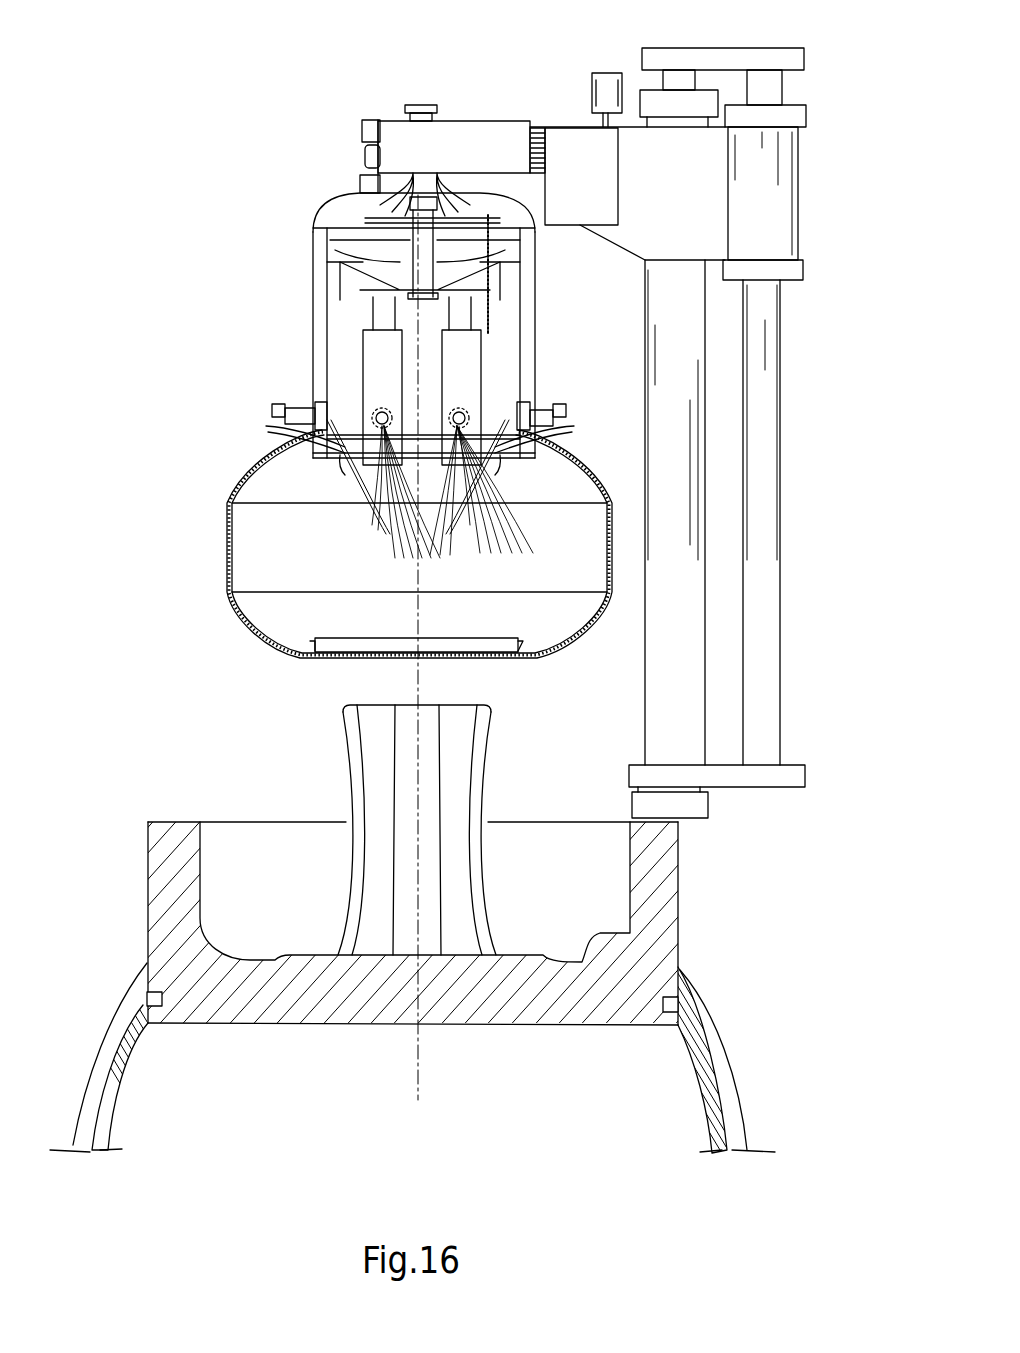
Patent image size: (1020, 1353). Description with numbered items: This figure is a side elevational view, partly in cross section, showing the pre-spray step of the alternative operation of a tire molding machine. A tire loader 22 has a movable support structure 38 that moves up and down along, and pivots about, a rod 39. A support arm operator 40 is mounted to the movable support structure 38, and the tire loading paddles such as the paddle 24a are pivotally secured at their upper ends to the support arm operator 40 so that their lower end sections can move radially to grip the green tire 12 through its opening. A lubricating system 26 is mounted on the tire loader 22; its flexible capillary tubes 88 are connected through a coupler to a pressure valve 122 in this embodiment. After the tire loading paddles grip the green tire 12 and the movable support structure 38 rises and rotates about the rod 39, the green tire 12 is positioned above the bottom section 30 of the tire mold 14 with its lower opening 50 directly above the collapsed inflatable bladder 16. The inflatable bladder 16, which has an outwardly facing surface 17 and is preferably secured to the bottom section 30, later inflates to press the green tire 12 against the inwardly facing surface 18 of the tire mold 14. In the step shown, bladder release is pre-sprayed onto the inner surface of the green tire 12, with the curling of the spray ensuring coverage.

The green tire 12 is at (228, 548).
The tire mold 14 is at (563, 1064).
The inflatable bladder 16 is at (380, 768).
The outwardly facing surface 17 is at (477, 757).
The inwardly facing surface 18 is at (444, 956).
The tire loader 22 is at (701, 410).
The tire loading paddle 24a is at (382, 353).
The lubricating system 26 is at (510, 143).
The bottom section 30 is at (310, 990).
The movable support structure 38 is at (400, 150).
The rod 39 is at (760, 348).
The support arm operator 40 is at (397, 365).
The lower opening 50 is at (350, 647).
The flexible capillary tube 88 is at (278, 404).
The pressure valve 122 is at (266, 447).